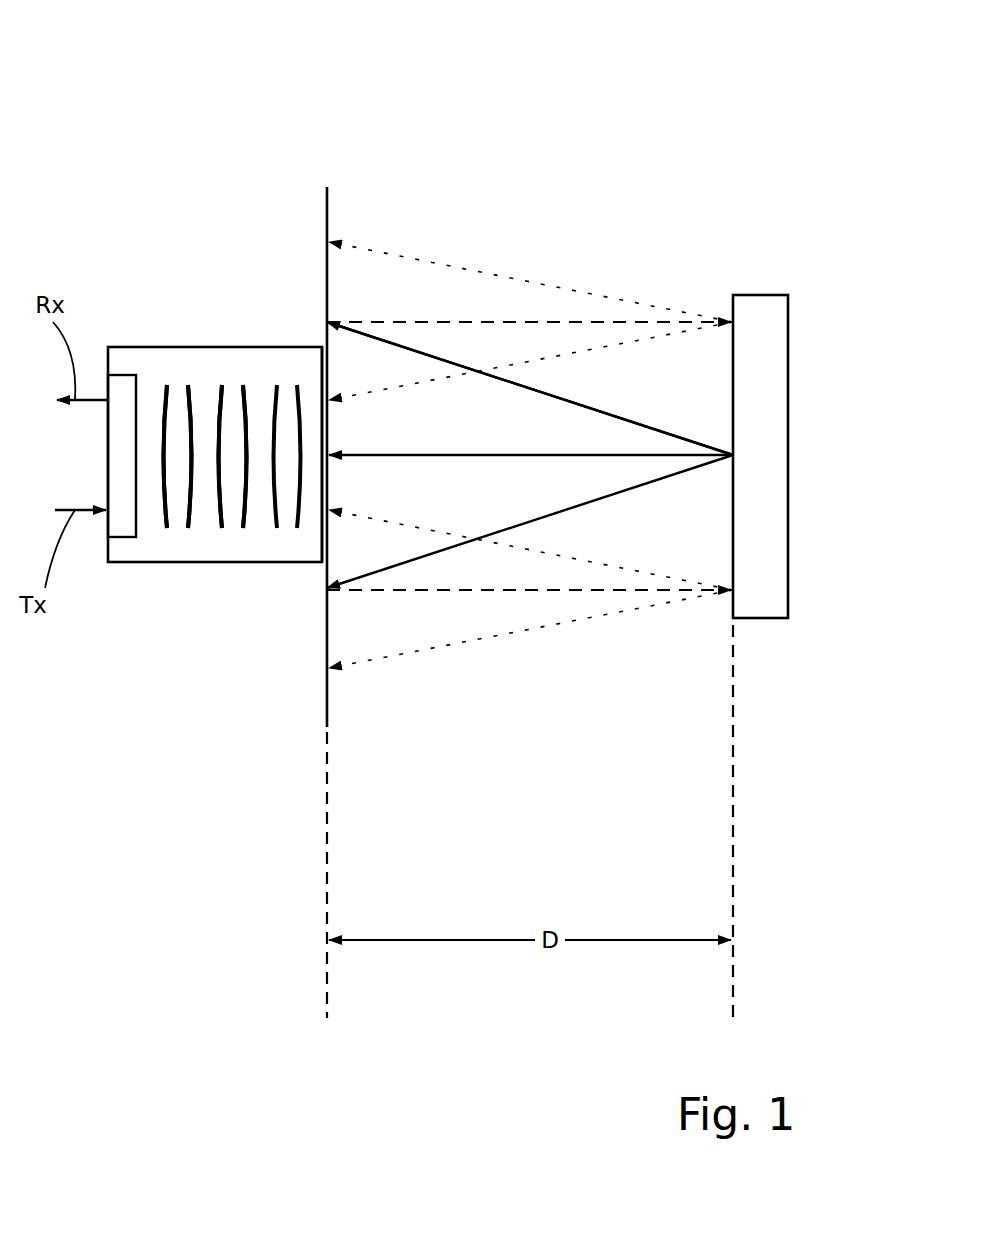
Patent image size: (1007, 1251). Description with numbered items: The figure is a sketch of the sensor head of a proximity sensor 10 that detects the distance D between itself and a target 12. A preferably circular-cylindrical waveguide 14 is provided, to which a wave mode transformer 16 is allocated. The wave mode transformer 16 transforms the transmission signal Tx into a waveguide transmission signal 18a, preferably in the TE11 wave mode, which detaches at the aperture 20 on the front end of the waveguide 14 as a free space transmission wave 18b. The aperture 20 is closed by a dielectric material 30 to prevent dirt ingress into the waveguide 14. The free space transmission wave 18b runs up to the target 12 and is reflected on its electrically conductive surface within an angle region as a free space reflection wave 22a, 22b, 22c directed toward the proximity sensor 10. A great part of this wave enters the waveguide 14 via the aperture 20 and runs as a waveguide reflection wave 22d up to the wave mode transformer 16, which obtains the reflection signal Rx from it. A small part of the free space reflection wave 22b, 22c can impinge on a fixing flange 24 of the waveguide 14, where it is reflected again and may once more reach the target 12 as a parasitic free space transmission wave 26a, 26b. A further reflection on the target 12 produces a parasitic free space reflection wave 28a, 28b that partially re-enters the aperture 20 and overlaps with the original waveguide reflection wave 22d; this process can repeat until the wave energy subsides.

The proximity sensor 10 is at (146, 123).
The target 12 is at (765, 295).
The waveguide 14 is at (135, 347).
The wave mode transformer 16 is at (122, 518).
The waveguide transmission signal 18a is at (188, 508).
The free space transmission wave 18b is at (730, 452).
The aperture 20 is at (305, 366).
The free space reflection wave 22a is at (330, 452).
The free space reflection wave 22b is at (595, 405).
The free space reflection wave 22c is at (565, 510).
The waveguide reflection wave 22d is at (218, 405).
The fixing flange 24 is at (327, 212).
The parasitic free space transmission wave 26a is at (533, 320).
The parasitic free space transmission wave 26b is at (532, 592).
The parasitic free space reflection wave 28a is at (398, 385).
The parasitic free space reflection wave 28b is at (398, 523).
The dielectric material 30 is at (324, 562).